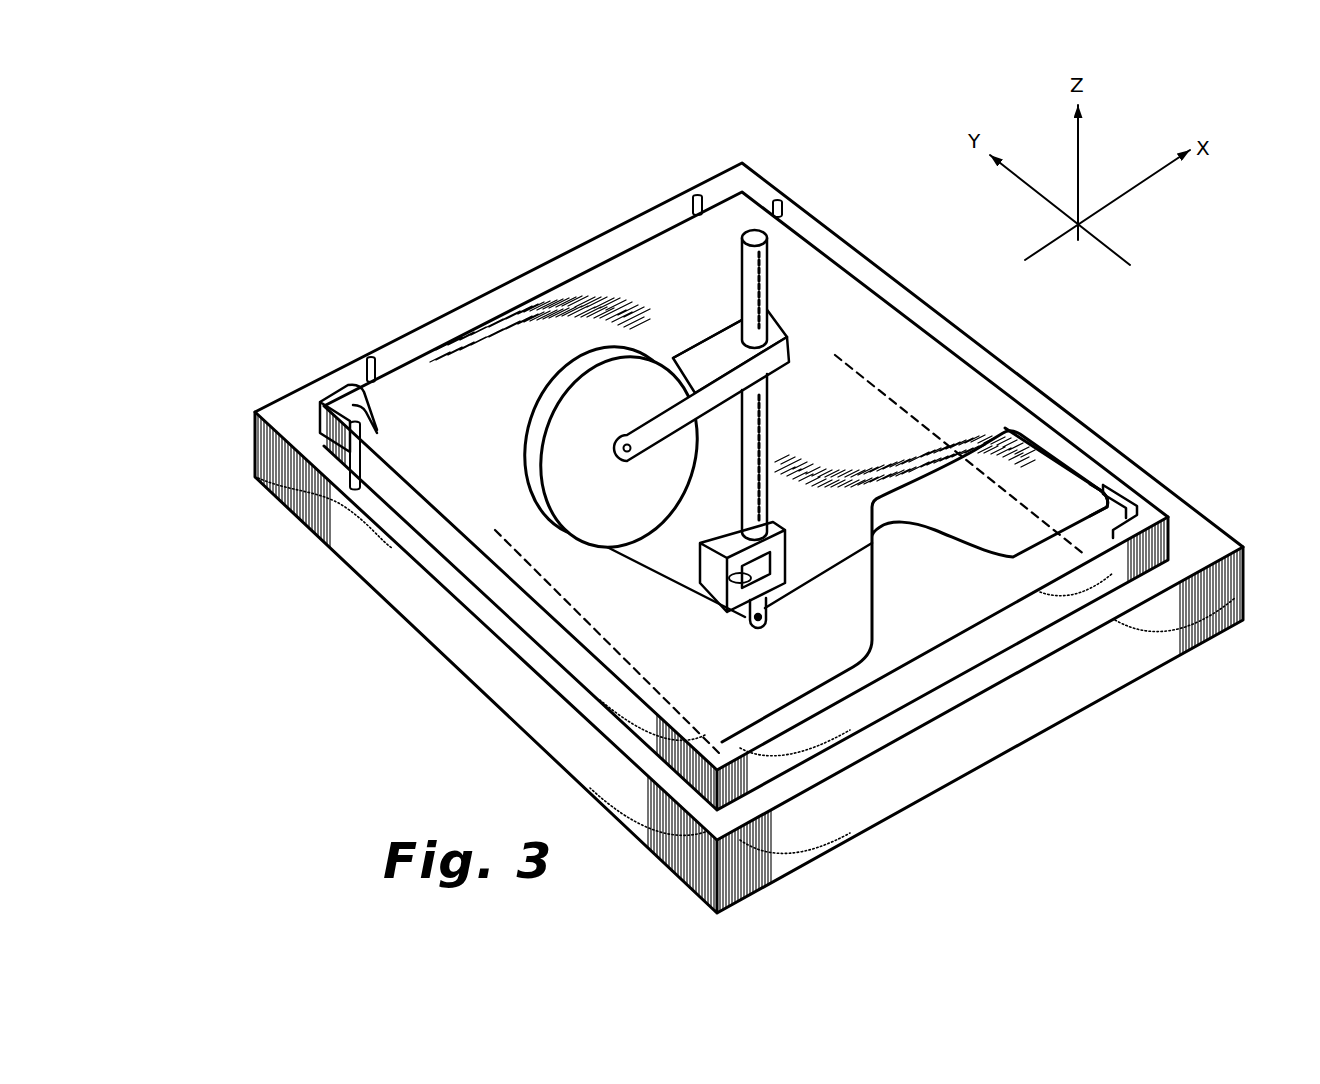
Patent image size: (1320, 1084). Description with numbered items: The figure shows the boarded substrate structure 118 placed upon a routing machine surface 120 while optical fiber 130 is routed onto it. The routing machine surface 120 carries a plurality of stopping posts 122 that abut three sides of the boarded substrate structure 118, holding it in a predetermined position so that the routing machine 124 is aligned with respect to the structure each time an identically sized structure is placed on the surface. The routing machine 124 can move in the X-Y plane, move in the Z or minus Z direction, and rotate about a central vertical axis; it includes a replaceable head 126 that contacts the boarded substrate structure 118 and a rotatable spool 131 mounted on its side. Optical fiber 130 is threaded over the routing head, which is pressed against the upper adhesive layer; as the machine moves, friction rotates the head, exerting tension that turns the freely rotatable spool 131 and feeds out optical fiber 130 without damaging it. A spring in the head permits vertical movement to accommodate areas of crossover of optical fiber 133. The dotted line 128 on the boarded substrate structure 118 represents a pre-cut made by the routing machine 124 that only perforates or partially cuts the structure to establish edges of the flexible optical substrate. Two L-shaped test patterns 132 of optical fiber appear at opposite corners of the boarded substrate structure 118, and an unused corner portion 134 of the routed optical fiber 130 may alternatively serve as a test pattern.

The boarded substrate structure 118 is at (1098, 581).
The routing machine surface 120 is at (1030, 706).
The stopping posts 122 is at (697, 197).
The routing machine 124 is at (770, 284).
The replaceable head 126 is at (745, 625).
The dotted line 128 is at (874, 387).
The optical fiber 130 is at (1049, 448).
The spool 131 is at (578, 416).
The L-shaped test patterns 132 is at (350, 400).
The crossover of optical fiber 133 is at (876, 548).
The corner portion 134 is at (1083, 477).